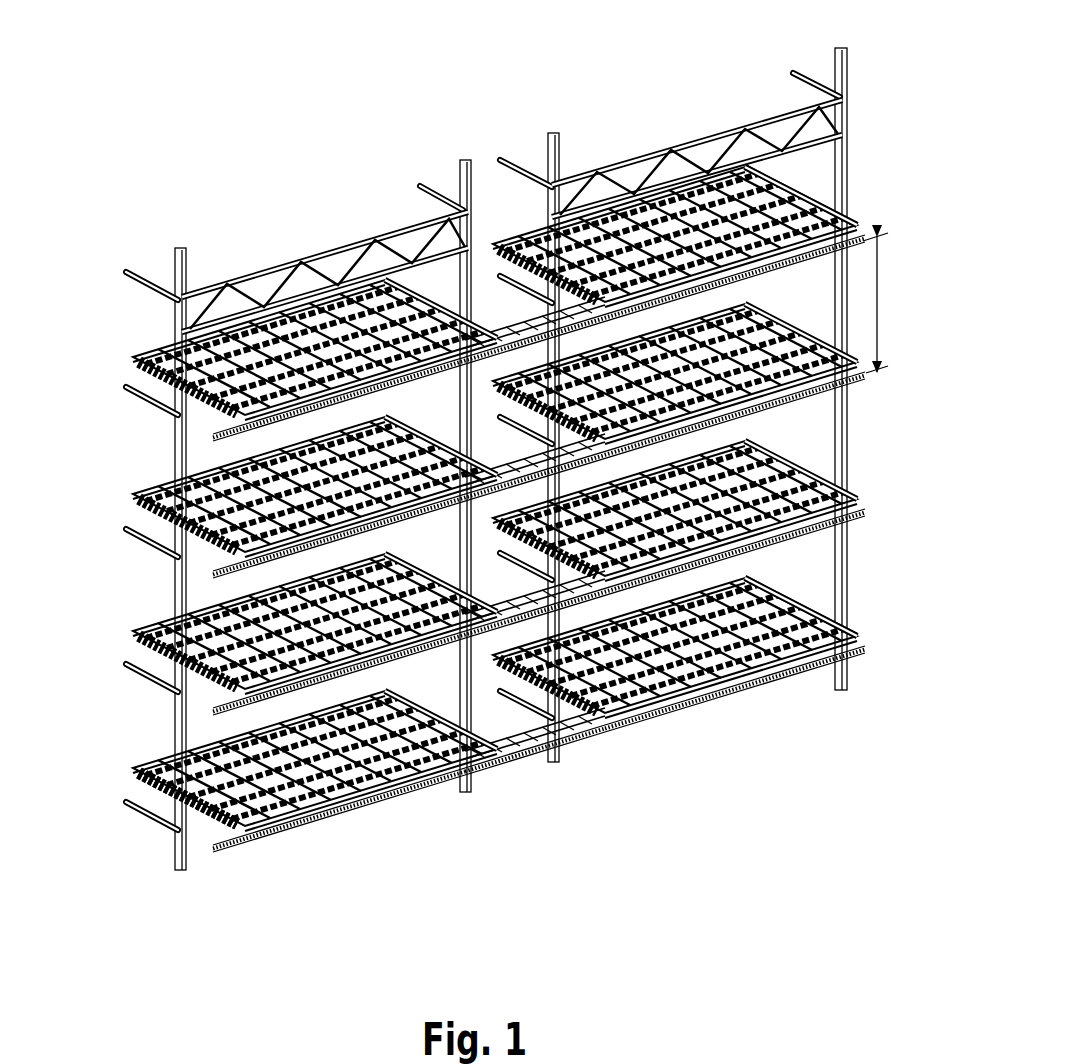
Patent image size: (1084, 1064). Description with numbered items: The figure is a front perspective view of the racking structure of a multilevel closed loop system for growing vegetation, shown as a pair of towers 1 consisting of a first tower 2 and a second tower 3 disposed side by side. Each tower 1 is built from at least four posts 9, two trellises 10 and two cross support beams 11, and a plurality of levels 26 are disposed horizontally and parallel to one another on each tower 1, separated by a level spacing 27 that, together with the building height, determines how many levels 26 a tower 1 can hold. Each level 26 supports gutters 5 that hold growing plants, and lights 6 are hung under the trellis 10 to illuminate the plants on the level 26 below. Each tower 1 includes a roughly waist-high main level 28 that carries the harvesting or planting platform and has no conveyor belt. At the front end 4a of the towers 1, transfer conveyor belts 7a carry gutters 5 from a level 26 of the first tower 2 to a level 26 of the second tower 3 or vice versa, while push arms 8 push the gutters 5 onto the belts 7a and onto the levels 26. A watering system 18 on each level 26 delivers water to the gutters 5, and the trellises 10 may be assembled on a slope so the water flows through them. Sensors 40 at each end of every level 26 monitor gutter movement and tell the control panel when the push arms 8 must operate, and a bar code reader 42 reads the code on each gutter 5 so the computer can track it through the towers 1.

The tower 1 is at (293, 92).
The first tower 2 is at (265, 198).
The second tower 3 is at (670, 122).
The front end 4a is at (685, 718).
The gutter 5 is at (800, 485).
The light 6 is at (830, 572).
The transfer conveyor belt 7a is at (525, 755).
The push arm 8 is at (400, 777).
The post 9 is at (183, 247).
The trellis 10 is at (320, 256).
The cross support beam 11 is at (155, 413).
The watering system 18 is at (148, 772).
The level 26 is at (813, 177).
The level spacing 27 is at (877, 307).
The main level 28 is at (160, 603).
The sensor 40 is at (257, 805).
The bar code reader 42 is at (807, 640).